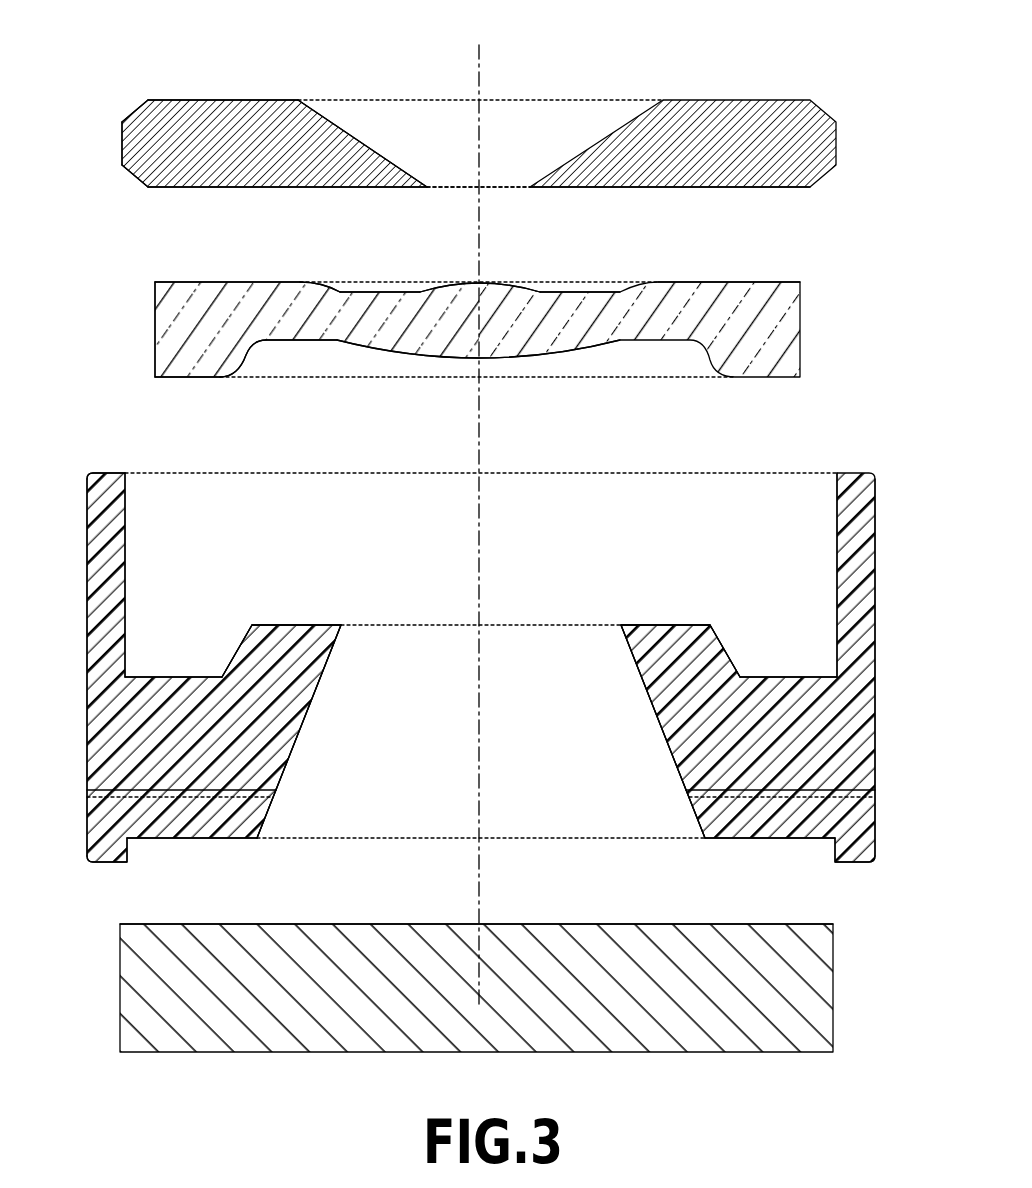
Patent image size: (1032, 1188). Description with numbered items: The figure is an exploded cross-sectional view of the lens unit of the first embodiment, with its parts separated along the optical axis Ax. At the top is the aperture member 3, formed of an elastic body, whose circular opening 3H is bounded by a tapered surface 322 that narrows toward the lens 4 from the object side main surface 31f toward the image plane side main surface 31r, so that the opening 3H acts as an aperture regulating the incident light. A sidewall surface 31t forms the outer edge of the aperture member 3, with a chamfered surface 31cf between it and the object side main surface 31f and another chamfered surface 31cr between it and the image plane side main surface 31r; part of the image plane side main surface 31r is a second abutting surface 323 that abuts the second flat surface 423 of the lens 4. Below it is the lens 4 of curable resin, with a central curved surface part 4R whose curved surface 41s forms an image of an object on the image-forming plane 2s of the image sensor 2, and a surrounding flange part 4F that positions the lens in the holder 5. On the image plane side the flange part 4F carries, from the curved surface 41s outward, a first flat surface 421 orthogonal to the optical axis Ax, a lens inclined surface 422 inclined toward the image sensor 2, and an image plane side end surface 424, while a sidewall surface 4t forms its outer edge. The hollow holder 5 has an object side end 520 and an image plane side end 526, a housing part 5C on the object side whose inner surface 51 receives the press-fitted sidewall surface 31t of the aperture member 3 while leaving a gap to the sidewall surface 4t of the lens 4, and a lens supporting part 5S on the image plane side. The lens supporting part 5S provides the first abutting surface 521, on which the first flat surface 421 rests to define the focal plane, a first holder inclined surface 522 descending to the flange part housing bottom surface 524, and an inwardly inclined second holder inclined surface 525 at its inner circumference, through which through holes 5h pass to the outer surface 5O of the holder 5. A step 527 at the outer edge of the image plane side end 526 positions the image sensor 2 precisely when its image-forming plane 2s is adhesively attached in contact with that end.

The image sensor 2 is at (95, 990).
The image-forming plane 2s is at (320, 923).
The aperture member 3 is at (129, 50).
The opening 3H is at (445, 184).
The chamfered surface 31cf is at (139, 103).
The chamfered surface 31cr is at (134, 178).
The object side main surface 31f is at (205, 100).
The image plane side main surface 31r is at (590, 190).
The sidewall surface 31t is at (120, 145).
The tapered surface 322 is at (316, 106).
The second abutting surface 323 is at (250, 190).
The lens 4 is at (75, 345).
The curved surface 41s is at (470, 282).
The first flat surface 421 is at (278, 342).
The lens inclined surface 422 is at (236, 362).
The second flat surface 423 is at (290, 282).
The image plane side end surface 424 is at (185, 378).
The flange part 4F is at (253, 326).
The curved surface part 4R is at (462, 326).
The sidewall surface 4t is at (155, 330).
The holder 5 is at (75, 686).
The inner surface 51 is at (127, 548).
The object side end 520 is at (100, 473).
The first abutting surface 521 is at (296, 623).
The first holder inclined surface 522 is at (237, 646).
The flange part housing bottom surface 524 is at (153, 675).
The second holder inclined surface 525 is at (300, 742).
The image plane side end 526 is at (221, 841).
The step 527 is at (139, 863).
The housing part 5C is at (875, 602).
The holder outer surface 5O is at (90, 602).
The lens supporting part 5S is at (294, 684).
The through holes 5h is at (87, 795).
The optical axis Ax is at (481, 80).